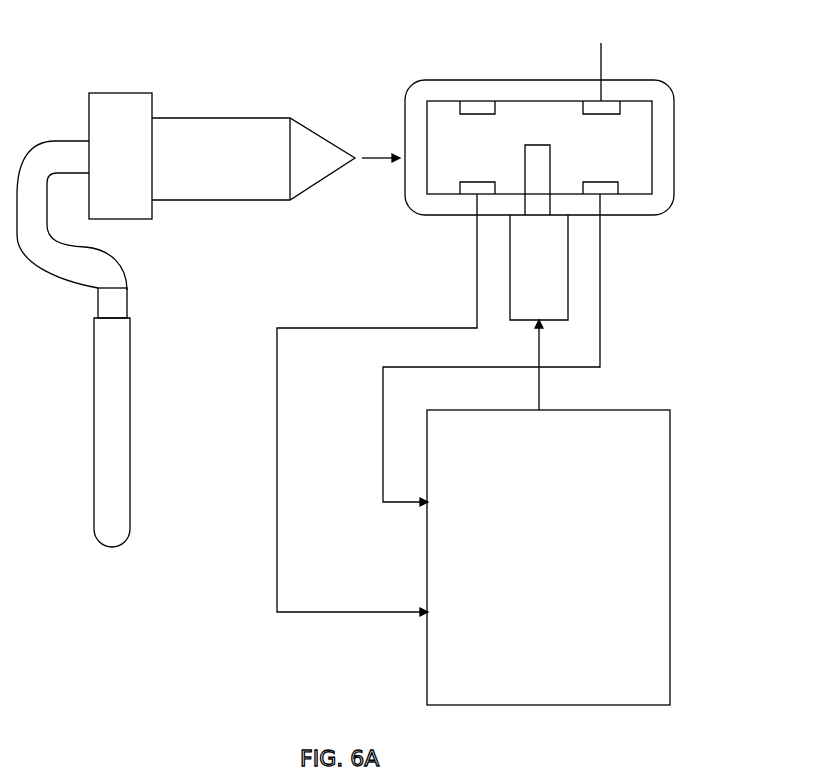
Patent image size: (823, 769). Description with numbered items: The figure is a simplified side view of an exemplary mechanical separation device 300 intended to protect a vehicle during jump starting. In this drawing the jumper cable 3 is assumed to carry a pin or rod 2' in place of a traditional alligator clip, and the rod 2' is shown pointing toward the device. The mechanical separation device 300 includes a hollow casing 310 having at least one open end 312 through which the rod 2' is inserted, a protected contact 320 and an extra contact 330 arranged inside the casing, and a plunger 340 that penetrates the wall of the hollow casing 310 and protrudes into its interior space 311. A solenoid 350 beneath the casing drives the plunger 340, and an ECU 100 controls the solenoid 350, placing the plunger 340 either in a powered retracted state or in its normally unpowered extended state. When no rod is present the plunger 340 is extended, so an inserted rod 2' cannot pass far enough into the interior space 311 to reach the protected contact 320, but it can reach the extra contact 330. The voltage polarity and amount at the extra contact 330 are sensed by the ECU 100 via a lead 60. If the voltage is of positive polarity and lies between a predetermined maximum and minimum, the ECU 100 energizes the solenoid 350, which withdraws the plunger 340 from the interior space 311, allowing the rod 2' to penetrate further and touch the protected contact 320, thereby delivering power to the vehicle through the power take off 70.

The jumper cable 3 is at (93, 390).
The rod 2' is at (276, 144).
The mechanical separation device 300 is at (556, 114).
The hollow casing 310 is at (675, 150).
The interior space 311 is at (638, 162).
The open end 312 is at (405, 122).
The protected contact 320 is at (628, 106).
The extra contact 330 is at (456, 110).
The power take off 70 is at (605, 58).
The plunger 340 is at (552, 168).
The solenoid 350 is at (553, 285).
The lead 60 is at (330, 325).
The ECU 100 is at (612, 410).